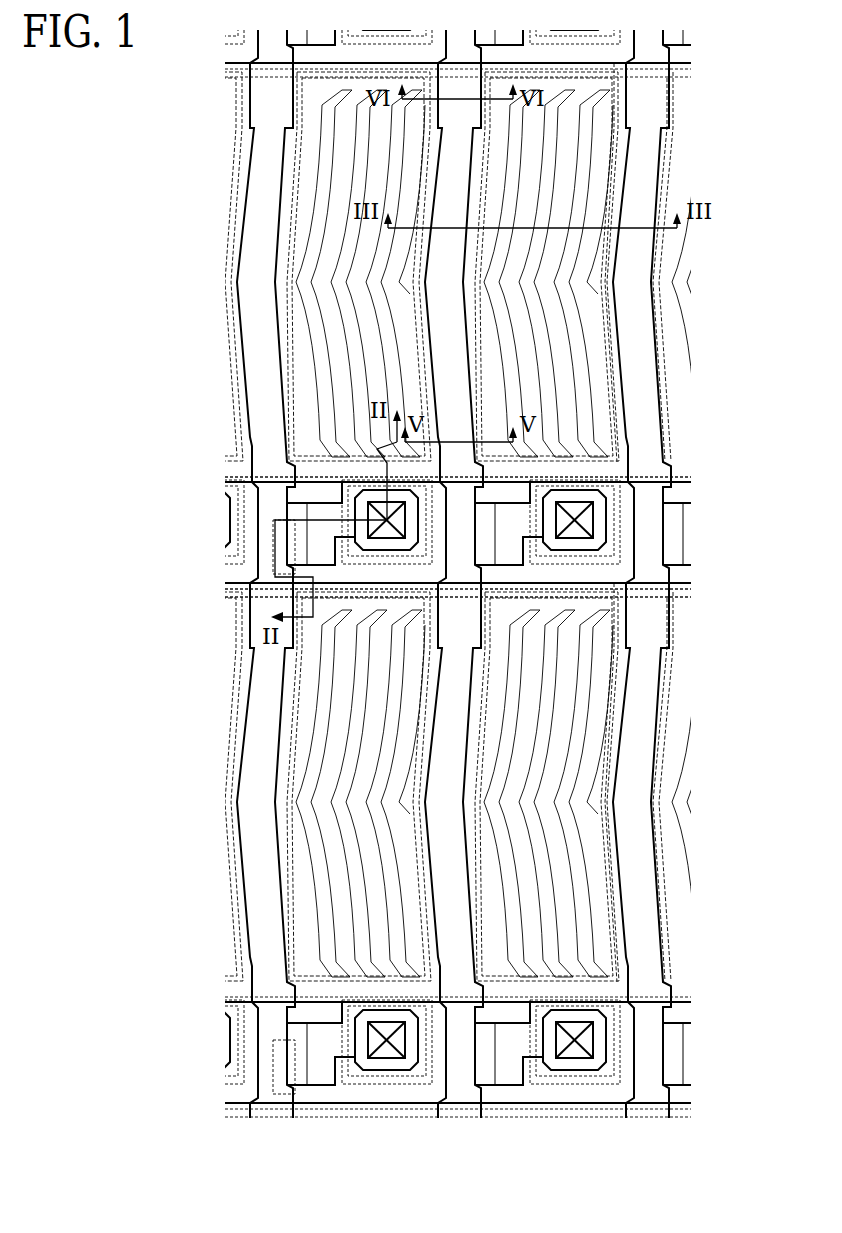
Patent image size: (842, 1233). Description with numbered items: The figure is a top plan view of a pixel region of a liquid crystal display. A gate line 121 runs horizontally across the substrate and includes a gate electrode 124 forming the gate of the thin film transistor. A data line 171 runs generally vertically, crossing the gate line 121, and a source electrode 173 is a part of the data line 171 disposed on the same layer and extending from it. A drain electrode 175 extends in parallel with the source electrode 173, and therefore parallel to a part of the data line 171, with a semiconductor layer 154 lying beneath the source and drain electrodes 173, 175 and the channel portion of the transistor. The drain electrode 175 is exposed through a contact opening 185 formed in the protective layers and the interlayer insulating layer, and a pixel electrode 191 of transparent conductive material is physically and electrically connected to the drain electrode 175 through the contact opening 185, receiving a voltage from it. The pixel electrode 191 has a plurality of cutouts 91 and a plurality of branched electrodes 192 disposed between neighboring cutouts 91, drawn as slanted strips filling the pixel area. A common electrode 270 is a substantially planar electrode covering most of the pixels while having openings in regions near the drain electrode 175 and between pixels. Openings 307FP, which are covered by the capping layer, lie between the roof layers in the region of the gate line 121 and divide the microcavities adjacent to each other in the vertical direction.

The gate line 121 is at (408, 1092).
The gate electrode 124 is at (250, 521).
The semiconductor layer 154 is at (304, 1090).
The data line 171 is at (235, 294).
The source electrode 173 is at (295, 1062).
The drain electrode 175 is at (335, 1078).
The contact opening 185 is at (386, 1062).
The pixel electrode 191 is at (625, 458).
The branched electrodes 192 is at (555, 385).
The cutouts 91 is at (570, 242).
The common electrode 270 is at (615, 167).
The openings 307FP is at (701, 482).